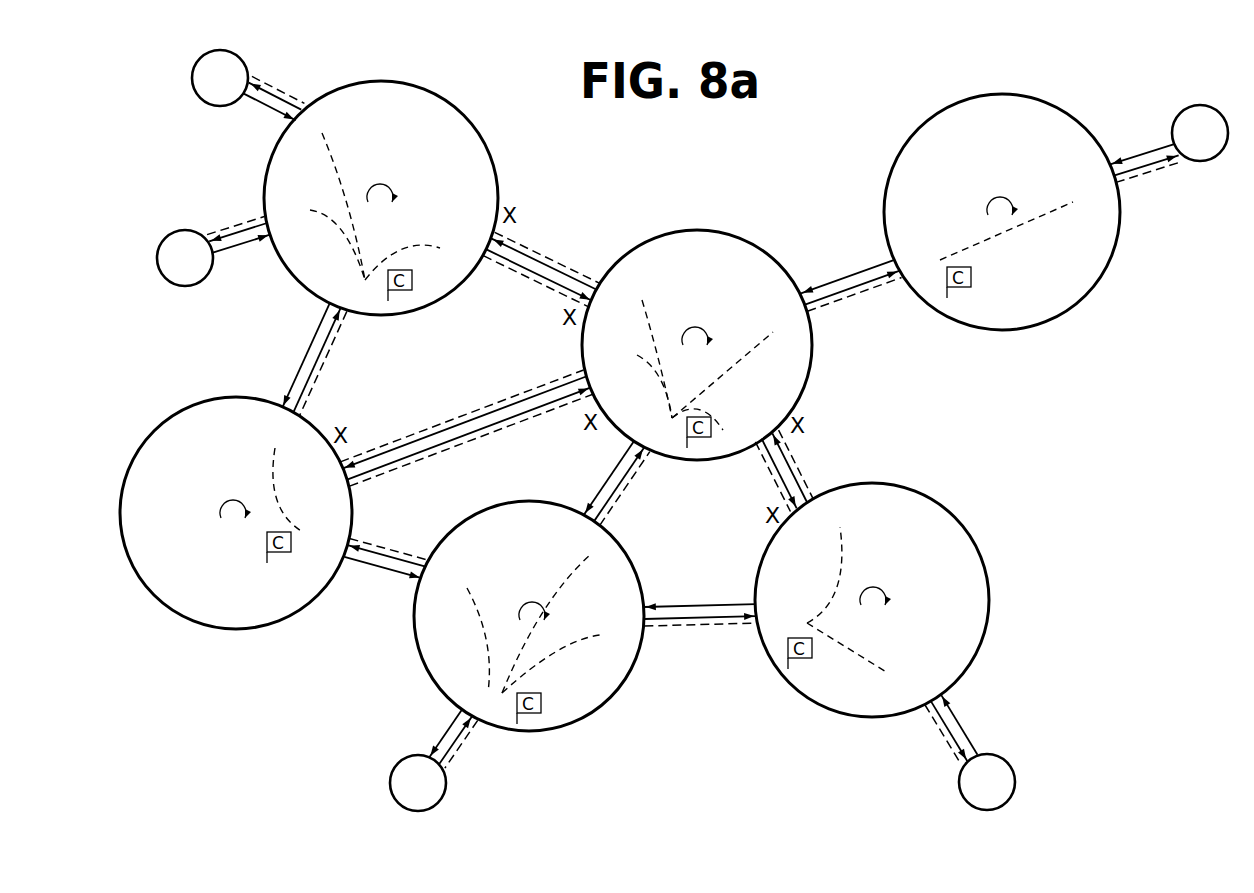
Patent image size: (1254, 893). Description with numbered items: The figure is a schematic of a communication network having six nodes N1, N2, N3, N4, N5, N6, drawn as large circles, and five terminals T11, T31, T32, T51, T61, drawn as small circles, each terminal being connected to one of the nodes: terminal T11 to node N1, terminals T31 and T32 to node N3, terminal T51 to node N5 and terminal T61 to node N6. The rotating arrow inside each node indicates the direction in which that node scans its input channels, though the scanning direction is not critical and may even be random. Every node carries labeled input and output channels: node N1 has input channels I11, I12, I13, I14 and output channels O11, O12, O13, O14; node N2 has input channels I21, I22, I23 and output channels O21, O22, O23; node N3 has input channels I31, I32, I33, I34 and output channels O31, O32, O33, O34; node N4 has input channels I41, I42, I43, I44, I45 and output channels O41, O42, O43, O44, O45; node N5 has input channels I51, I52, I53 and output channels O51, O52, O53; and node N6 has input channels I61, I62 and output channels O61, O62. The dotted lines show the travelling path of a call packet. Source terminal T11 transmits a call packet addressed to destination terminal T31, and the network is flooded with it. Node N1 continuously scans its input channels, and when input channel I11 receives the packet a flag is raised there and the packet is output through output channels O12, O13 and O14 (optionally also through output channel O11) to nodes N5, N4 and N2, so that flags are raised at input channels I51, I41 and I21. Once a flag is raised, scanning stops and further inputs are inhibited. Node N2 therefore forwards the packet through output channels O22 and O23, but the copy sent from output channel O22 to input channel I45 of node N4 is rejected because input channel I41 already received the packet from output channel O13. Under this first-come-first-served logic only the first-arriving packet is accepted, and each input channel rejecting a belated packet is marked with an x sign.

The node N1 is at (582, 721).
The node N2 is at (235, 629).
The node N3 is at (487, 147).
The node N4 is at (745, 240).
The node N5 is at (988, 598).
The node N6 is at (1035, 326).
The terminal T11 is at (445, 790).
The terminal T31 is at (193, 79).
The terminal T32 is at (169, 282).
The terminal T51 is at (1015, 781).
The terminal T61 is at (1220, 113).
The output channel O11 is at (467, 690).
The output channel O12 is at (617, 625).
The output channel O13 is at (597, 545).
The output channel O14 is at (447, 572).
The input channel I11 is at (494, 707).
The input channel I12 is at (614, 600).
The input channel I13 is at (569, 525).
The input channel I14 is at (436, 594).
The output channel O21 is at (314, 560).
The output channel O22 is at (320, 505).
The output channel O23 is at (285, 437).
The input channel I21 is at (318, 535).
The input channel I22 is at (308, 472).
The input channel I23 is at (251, 420).
The output channel O31 is at (327, 275).
The output channel O32 is at (459, 249).
The output channel O33 is at (328, 115).
The output channel O34 is at (287, 209).
The input channel I31 is at (363, 294).
The input channel I32 is at (466, 224).
The input channel I33 is at (303, 135).
The input channel I34 is at (291, 237).
The output channel O41 is at (637, 420).
The output channel O42 is at (737, 437).
The output channel O43 is at (790, 325).
The output channel O44 is at (620, 289).
The output channel O45 is at (605, 357).
The input channel I41 is at (664, 429).
The input channel I42 is at (758, 410).
The input channel I43 is at (771, 287).
The input channel I44 is at (606, 309).
The input channel I45 is at (611, 385).
The output channel O51 is at (779, 594).
The output channel O52 is at (905, 687).
The output channel O53 is at (839, 512).
The input channel I51 is at (778, 624).
The input channel I52 is at (933, 670).
The input channel I53 is at (814, 529).
The output channel O61 is at (909, 242).
The output channel O62 is at (1094, 195).
The input channel I61 is at (914, 265).
The input channel I62 is at (1074, 162).